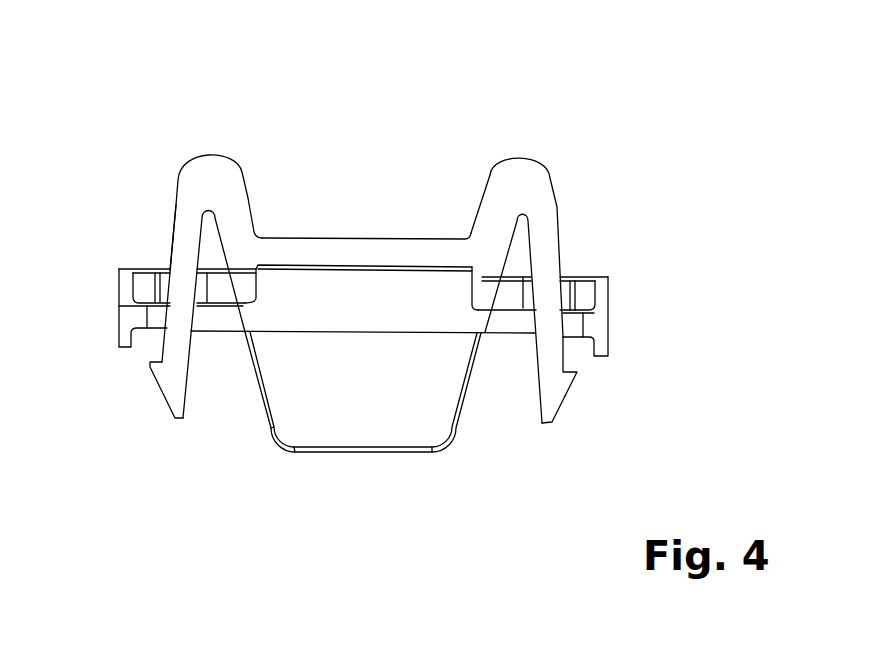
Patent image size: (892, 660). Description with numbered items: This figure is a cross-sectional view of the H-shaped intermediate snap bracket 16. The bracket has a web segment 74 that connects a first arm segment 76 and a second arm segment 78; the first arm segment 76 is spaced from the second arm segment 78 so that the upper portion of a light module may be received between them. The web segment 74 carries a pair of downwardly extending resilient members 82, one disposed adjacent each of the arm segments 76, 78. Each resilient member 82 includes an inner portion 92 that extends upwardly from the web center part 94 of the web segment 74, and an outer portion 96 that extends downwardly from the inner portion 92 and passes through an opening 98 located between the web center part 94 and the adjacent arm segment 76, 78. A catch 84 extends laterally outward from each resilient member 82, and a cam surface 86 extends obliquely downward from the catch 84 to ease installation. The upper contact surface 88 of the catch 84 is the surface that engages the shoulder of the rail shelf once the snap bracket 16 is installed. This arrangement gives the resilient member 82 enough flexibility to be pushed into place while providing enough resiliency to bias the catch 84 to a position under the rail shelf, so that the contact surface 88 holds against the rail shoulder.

The intermediate snap bracket 16 is at (607, 120).
The web segment 74 is at (387, 240).
The first arm segment 76 is at (118, 313).
The second arm segment 78 is at (608, 295).
The resilient member 82 is at (550, 255).
The catch 84 is at (578, 378).
The cam surface 86 is at (563, 405).
The upper contact surface 88 is at (157, 352).
The inner portion 92 is at (238, 209).
The web center part 94 is at (312, 262).
The outer portion 96 is at (182, 239).
The opening 98 is at (503, 307).